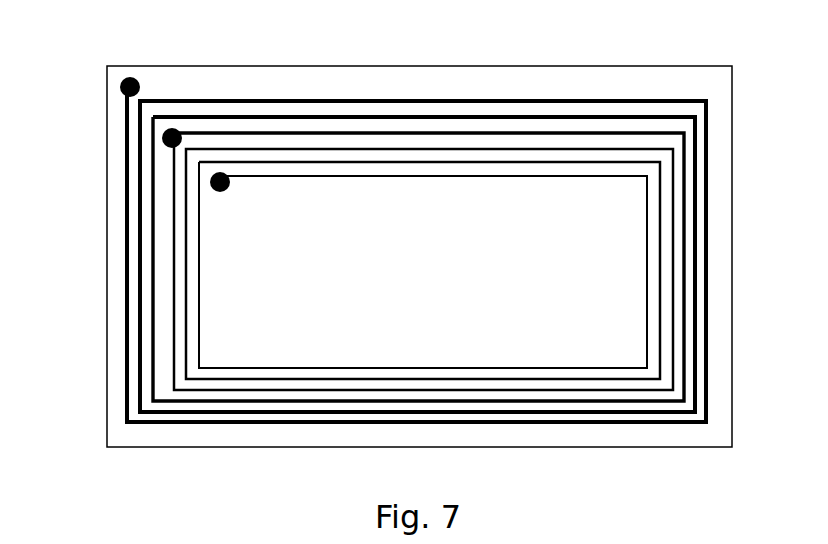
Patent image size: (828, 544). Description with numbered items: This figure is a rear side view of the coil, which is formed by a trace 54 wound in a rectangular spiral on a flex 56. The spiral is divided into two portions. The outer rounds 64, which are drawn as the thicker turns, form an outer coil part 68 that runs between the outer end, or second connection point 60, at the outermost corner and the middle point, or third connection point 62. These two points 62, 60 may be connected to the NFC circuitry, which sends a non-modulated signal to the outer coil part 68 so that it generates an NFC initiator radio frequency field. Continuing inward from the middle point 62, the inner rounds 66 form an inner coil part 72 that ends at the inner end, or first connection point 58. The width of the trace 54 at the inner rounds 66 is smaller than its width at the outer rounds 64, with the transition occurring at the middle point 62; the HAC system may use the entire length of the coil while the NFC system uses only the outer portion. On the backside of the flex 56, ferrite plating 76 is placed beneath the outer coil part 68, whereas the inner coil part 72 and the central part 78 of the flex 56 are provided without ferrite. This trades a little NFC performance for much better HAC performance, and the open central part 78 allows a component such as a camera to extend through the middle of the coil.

The trace 54 is at (416, 224).
The outer coil part 68 is at (478, 99).
The flex 56 is at (410, 257).
The inner end (first connection point) 58 is at (228, 188).
The outer end (second connection point) 60 is at (122, 82).
The middle point (third connection point) 62 is at (165, 143).
The outer rounds 64 is at (455, 232).
The inner rounds 66 is at (478, 264).
The inner coil part 72 is at (412, 176).
The ferrite plating 76 is at (107, 398).
The central part 78 is at (488, 282).